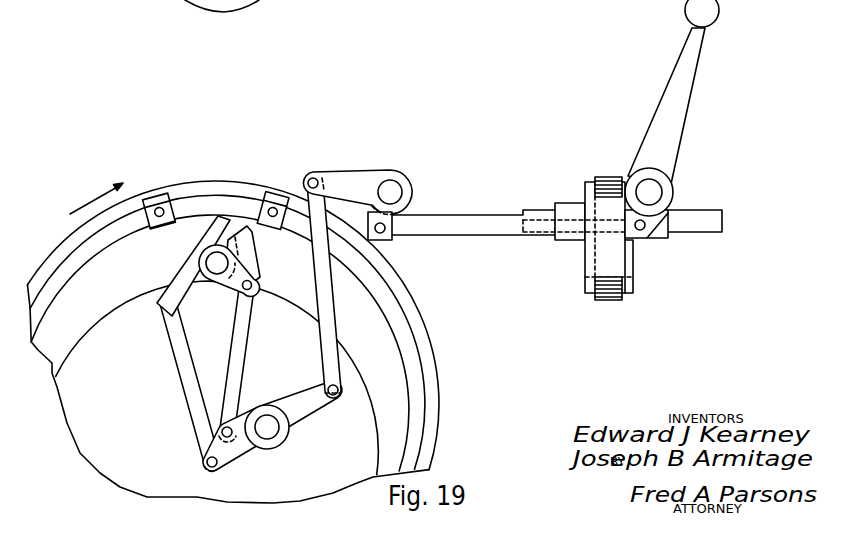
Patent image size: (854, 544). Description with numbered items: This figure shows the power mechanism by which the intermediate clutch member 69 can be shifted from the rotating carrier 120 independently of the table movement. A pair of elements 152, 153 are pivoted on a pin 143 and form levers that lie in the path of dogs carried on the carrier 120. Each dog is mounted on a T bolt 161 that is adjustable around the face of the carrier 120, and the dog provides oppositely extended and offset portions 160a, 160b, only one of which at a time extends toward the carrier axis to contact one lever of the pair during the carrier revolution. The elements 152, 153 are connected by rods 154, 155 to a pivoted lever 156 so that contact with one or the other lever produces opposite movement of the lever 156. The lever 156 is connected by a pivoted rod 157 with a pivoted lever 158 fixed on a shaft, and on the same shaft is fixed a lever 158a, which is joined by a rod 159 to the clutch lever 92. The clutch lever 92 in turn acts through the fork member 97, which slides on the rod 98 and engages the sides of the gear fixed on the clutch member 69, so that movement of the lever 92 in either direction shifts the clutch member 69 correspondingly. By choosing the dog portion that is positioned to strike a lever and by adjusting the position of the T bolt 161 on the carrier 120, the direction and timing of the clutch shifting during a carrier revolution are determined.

The carrier 120 is at (429, 352).
The dog portion 160a is at (148, 198).
The dog portion 160b is at (172, 227).
The T bolt 161 is at (147, 232).
The lever element 153 is at (208, 236).
The lever element 152 is at (249, 234).
The pin 143 is at (218, 270).
The rod 154 is at (180, 373).
The rod 155 is at (250, 327).
The pivoted lever 156 is at (285, 396).
The pivoted rod 157 is at (337, 330).
The pivoted lever 158 is at (343, 170).
The lever 158a is at (400, 240).
The rod 159 is at (452, 217).
The fork member 97 is at (585, 267).
The intermediate clutch member 69 is at (604, 177).
The rod 98 is at (699, 212).
The lever 92 is at (690, 78).